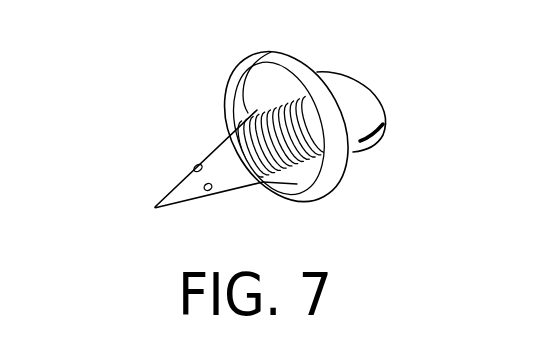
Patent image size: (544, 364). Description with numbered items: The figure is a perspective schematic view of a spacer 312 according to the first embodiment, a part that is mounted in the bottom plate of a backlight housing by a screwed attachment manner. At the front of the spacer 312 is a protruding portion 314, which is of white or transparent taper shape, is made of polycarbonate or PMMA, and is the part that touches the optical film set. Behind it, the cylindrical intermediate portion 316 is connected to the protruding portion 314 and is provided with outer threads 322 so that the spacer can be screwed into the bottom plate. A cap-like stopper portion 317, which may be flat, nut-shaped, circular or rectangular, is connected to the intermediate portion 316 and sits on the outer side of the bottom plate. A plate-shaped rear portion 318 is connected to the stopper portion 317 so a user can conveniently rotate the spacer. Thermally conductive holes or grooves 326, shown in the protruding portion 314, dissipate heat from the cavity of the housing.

The spacer 312 is at (523, 42).
The protruding portion 314 is at (180, 182).
The intermediate portion 316 is at (253, 108).
The stopper portion 317 is at (347, 167).
The rear portion 318 is at (348, 93).
The outer threads 322 is at (297, 168).
The thermally conductive holes or grooves 326 is at (207, 191).